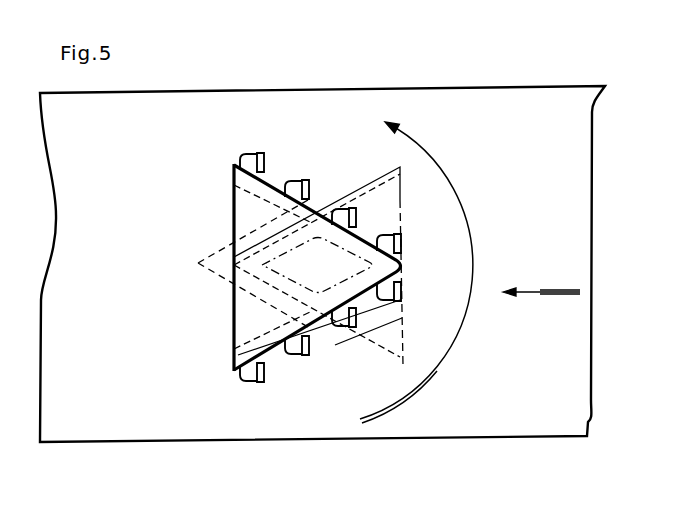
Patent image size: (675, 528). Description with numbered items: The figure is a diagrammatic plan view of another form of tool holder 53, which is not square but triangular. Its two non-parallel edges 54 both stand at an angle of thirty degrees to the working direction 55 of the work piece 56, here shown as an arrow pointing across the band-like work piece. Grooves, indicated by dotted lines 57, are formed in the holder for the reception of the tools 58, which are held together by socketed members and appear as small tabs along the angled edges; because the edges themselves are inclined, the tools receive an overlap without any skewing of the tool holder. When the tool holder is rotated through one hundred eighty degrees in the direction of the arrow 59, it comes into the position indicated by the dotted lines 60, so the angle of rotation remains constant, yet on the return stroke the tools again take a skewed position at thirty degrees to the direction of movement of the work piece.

The tool holder 53 is at (250, 314).
The non-parallel edges 54 is at (233, 163).
The working direction 55 is at (545, 296).
The work piece 56 is at (488, 398).
The grooves 57 is at (285, 265).
The tools 58 is at (392, 240).
The arrow 59 is at (417, 137).
The dotted lines 60 is at (386, 236).